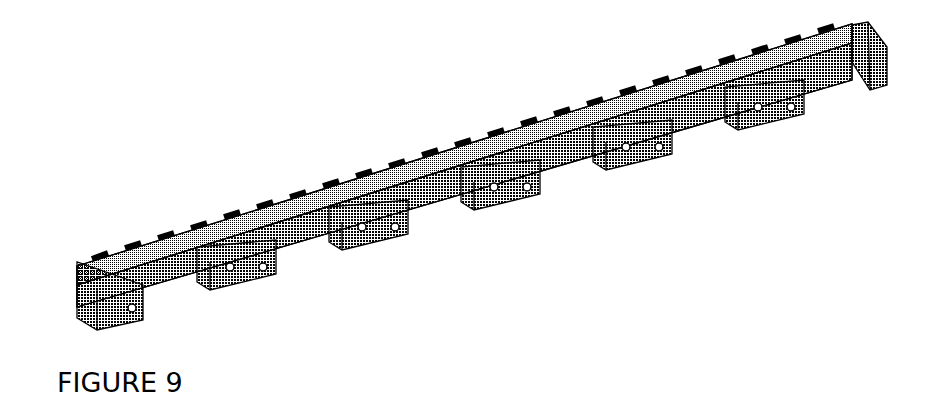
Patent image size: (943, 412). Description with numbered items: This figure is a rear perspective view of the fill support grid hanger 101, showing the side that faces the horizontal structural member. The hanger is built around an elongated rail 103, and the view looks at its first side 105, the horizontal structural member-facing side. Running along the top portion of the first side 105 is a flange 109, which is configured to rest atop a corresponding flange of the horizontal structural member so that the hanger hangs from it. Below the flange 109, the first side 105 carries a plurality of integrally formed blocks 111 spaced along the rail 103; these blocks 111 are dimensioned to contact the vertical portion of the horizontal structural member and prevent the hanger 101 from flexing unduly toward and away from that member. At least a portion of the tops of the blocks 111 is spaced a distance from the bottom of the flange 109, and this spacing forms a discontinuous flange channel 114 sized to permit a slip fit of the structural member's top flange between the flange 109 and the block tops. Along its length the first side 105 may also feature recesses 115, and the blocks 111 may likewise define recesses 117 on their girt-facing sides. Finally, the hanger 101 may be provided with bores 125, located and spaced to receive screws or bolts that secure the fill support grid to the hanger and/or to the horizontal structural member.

The fill support grid hanger 101 is at (451, 192).
The elongated rail 103 is at (464, 187).
The first side 105 is at (157, 293).
The flange 109 is at (110, 253).
The blocks 111 is at (473, 227).
The discontinuous flange channel 114 is at (77, 276).
The recesses 115 is at (656, 188).
The recesses 117 is at (302, 281).
The bores 125 is at (770, 139).